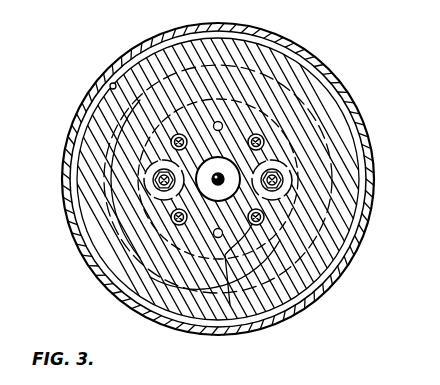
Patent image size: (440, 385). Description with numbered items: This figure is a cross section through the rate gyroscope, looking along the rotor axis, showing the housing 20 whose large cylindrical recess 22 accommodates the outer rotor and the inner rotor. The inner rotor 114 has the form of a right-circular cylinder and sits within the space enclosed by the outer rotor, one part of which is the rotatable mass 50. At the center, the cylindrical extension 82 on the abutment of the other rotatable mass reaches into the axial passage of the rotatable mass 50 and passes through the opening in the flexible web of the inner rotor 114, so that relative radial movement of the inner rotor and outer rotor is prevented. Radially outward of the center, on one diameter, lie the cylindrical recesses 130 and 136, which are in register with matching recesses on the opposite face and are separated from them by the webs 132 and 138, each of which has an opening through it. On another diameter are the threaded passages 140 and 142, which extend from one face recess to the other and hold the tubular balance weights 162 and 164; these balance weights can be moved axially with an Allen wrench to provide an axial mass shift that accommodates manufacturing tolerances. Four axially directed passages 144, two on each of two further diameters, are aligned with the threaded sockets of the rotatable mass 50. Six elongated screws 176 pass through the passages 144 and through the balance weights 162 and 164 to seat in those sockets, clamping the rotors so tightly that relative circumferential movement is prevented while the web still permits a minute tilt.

The housing 20 is at (114, 63).
The cylindrical recess 22 is at (111, 84).
The rotatable mass 50 is at (216, 182).
The cylindrical extension 82 is at (117, 304).
The inner rotor 114 is at (358, 243).
The cylindrical recess 130 is at (258, 105).
The web 132 is at (240, 110).
The cylindrical recess 136 is at (187, 313).
The web 138 is at (230, 305).
The threaded passage 140 is at (157, 161).
The threaded passage 142 is at (300, 202).
The axially directed passages 144 is at (97, 273).
The balance weight 162 is at (150, 187).
The balance weight 164 is at (285, 178).
The elongated screws 176 is at (171, 140).